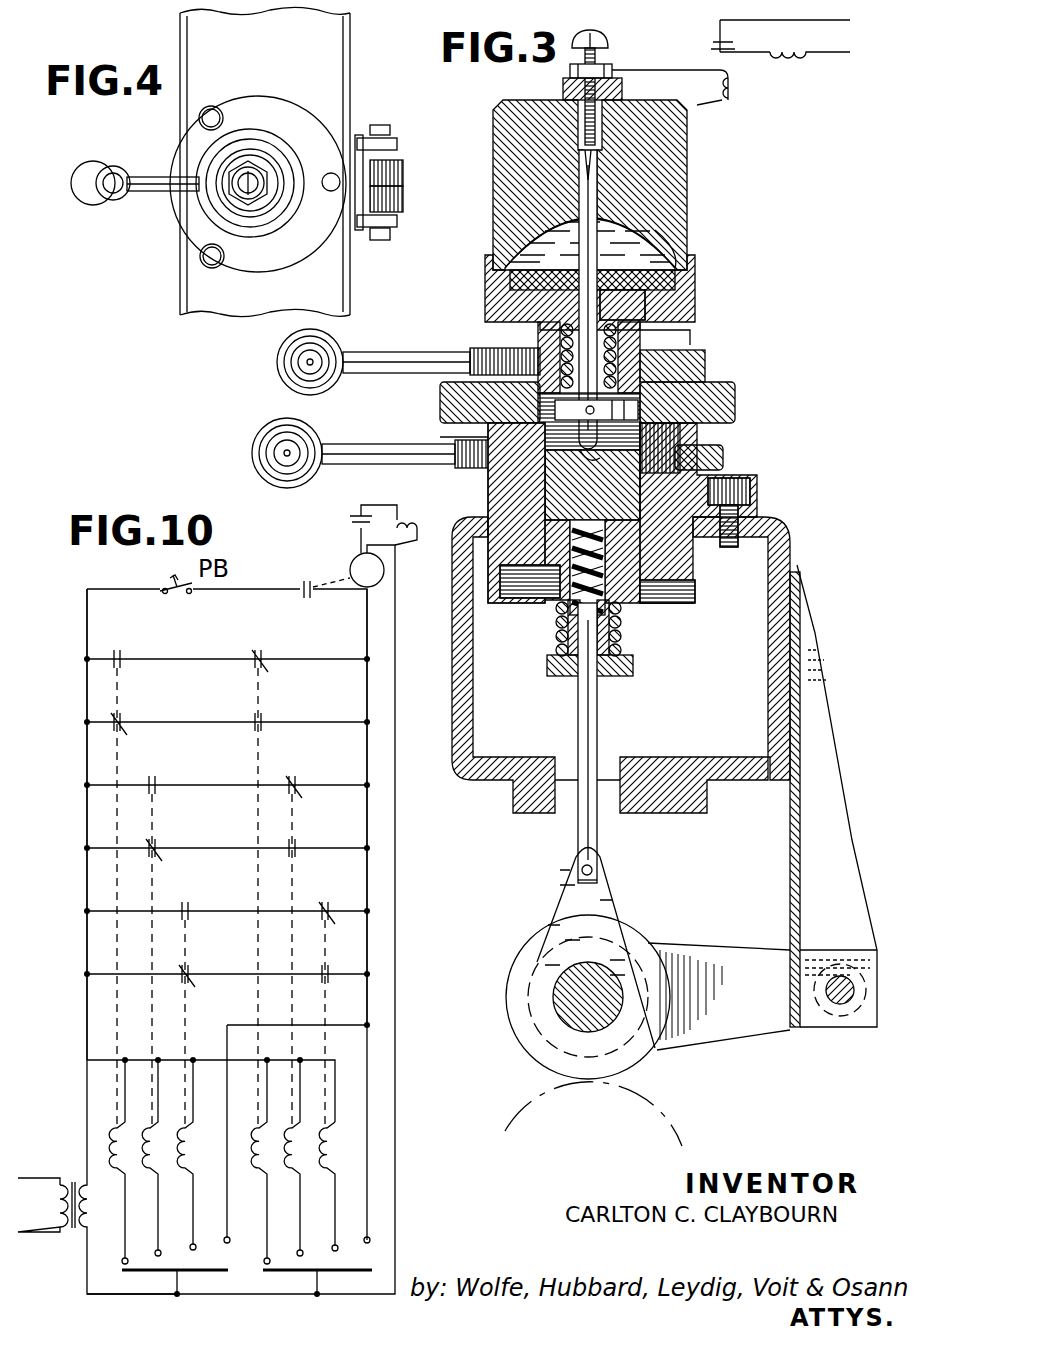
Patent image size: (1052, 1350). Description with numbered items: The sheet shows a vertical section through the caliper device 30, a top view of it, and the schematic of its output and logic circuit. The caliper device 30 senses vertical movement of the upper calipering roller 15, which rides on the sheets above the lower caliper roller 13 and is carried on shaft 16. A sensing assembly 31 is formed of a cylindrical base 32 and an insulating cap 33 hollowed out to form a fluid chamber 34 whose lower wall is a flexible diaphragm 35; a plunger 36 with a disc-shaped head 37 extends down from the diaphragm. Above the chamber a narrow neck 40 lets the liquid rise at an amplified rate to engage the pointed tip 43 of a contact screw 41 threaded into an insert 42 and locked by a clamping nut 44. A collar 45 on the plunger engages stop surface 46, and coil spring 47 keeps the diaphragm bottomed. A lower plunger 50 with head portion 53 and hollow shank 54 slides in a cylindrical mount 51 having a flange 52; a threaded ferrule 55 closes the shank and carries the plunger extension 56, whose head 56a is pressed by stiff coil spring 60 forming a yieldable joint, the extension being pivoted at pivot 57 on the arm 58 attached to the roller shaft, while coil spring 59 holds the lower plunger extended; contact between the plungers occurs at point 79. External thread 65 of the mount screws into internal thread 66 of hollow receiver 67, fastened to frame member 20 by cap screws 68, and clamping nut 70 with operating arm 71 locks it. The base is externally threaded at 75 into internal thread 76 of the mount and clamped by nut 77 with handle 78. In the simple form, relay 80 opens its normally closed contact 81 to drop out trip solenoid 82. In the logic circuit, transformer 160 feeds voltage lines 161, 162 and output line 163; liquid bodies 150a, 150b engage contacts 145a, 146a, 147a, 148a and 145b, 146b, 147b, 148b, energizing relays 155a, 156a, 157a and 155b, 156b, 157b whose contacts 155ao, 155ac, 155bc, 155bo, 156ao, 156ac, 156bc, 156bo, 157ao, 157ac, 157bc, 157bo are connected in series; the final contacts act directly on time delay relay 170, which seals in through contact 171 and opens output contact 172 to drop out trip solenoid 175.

In FIG. 3, the lower caliper roller 13 is at (512, 1105).
In FIG. 3, the upper calipering roller 15 is at (508, 990).
In FIG. 3, the shaft 16 is at (565, 1008).
In FIG. 3, the transverse hollow frame member 20 is at (452, 727).
In FIG. 3, the caliper device 30 is at (608, 618).
In FIG. 3, the sensing assembly 31 is at (585, 231).
In FIG. 3, the cylindrical base 32 is at (485, 305).
In FIG. 3, the housing or cap 33 is at (493, 202).
In FIG. 3, the fluid chamber 34 is at (590, 243).
In FIG. 3, the flexible diaphragm 35 is at (672, 243).
In FIG. 3, the plunger 36 is at (610, 303).
In FIG. 3, the disc-shaped head 37 is at (675, 280).
In FIG. 3, the neck portion or passage 40 is at (590, 198).
In FIG. 4, the contact screw 41 is at (255, 192).
In FIG. 3, the contact screw 41 is at (600, 40).
In FIG. 4, the insert 42 is at (236, 190).
In FIG. 3, the insert 42 is at (565, 92).
In FIG. 3, the pointed tip 43 is at (595, 170).
In FIG. 4, the clamping nut 44 is at (244, 198).
In FIG. 3, the clamping nut 44 is at (614, 72).
In FIG. 3, the collar 45 is at (630, 405).
In FIG. 3, the stop surface 46 is at (675, 365).
In FIG. 3, the coil spring 47 is at (540, 343).
In FIG. 3, the lower plunger 50 is at (560, 487).
In FIG. 3, the cylindrical mount 51 is at (518, 540).
In FIG. 4, the flange 52 is at (289, 123).
In FIG. 3, the flange 52 is at (440, 405).
In FIG. 3, the head portion 53 is at (592, 485).
In FIG. 3, the hollow shank portion 54 is at (555, 617).
In FIG. 3, the threaded ferrule 55 is at (567, 676).
In FIG. 3, the plunger extension 56 is at (598, 738).
In FIG. 3, the head 56a is at (625, 632).
In FIG. 3, the pivot 57 is at (595, 868).
In FIG. 3, the lever arm 58 is at (610, 898).
In FIG. 3, the coil spring 59 is at (555, 645).
In FIG. 3, the stiff coil spring 60 is at (612, 600).
In FIG. 3, the external thread 65 is at (480, 437).
In FIG. 3, the internal thread 66 is at (520, 598).
In FIG. 4, the hollow receiver 67 is at (255, 262).
In FIG. 3, the hollow receiver 67 is at (693, 585).
In FIG. 4, the cap screws 68 is at (205, 110).
In FIG. 3, the cap screws 68 is at (750, 490).
In FIG. 3, the clamping nut 70 is at (723, 458).
In FIG. 3, the operating arm 71 is at (365, 465).
In FIG. 3, the external thread 75 is at (650, 338).
In FIG. 3, the internal thread 76 is at (680, 435).
In FIG. 4, the clamping nut 77 is at (200, 162).
In FIG. 3, the clamping nut 77 is at (700, 370).
In FIG. 4, the handle 78 is at (147, 195).
In FIG. 3, the handle 78 is at (385, 375).
In FIG. 3, the point 79 is at (607, 469).
In FIG. 3, the relay 80 is at (730, 92).
In FIG. 3, the normally closed contact 81 is at (717, 40).
In FIG. 3, the trip solenoid 82 is at (795, 62).
In FIG. 10, the lowest level contact 145a is at (120, 1262).
In FIG. 10, the contact 146a is at (154, 1254).
In FIG. 10, the contact 147a is at (189, 1247).
In FIG. 10, the final level contact 148a is at (223, 1240).
In FIG. 10, the lowest level contact 145b is at (262, 1262).
In FIG. 10, the contact 146b is at (296, 1254).
In FIG. 10, the contact 147b is at (331, 1248).
In FIG. 10, the final level contact 148b is at (363, 1240).
In FIG. 10, the body of conductive liquid 150a is at (197, 1272).
In FIG. 10, the body of conductive liquid 150b is at (335, 1272).
In FIG. 10, the relay 155a is at (112, 1124).
In FIG. 10, the relay 156a is at (147, 1124).
In FIG. 10, the relay 157a is at (182, 1124).
In FIG. 10, the relay 155b is at (254, 1124).
In FIG. 10, the relay 156b is at (289, 1124).
In FIG. 10, the relay 157b is at (324, 1124).
In FIG. 10, the normally open contact 155ao is at (120, 655).
In FIG. 10, the normally closed contact 155bc is at (261, 655).
In FIG. 10, the normally closed contact 155ac is at (120, 718).
In FIG. 10, the normally open contact 155bo is at (262, 718).
In FIG. 10, the normally open contact 156ao is at (156, 780).
In FIG. 10, the normally closed contact 156bc is at (292, 780).
In FIG. 10, the normally closed contact 156ac is at (156, 843).
In FIG. 10, the normally open contact 156bo is at (295, 843).
In FIG. 10, the normally open contact 157ao is at (188, 905).
In FIG. 10, the normally closed contact 157bc is at (340, 890).
In FIG. 10, the normally closed contact 157ac is at (200, 953).
In FIG. 10, the normally open contact 157bo is at (338, 953).
In FIG. 10, the transformer 160 is at (72, 1185).
In FIG. 10, the voltage line 161 is at (122, 1297).
In FIG. 10, the voltage line 162 is at (87, 888).
In FIG. 10, the switched or output line 163 is at (365, 882).
In FIG. 10, the time delay relay 170 is at (350, 560).
In FIG. 10, the sealing contact 171 is at (300, 588).
In FIG. 10, the output contact 172 is at (350, 519).
In FIG. 10, the trip solenoid 175 is at (400, 525).